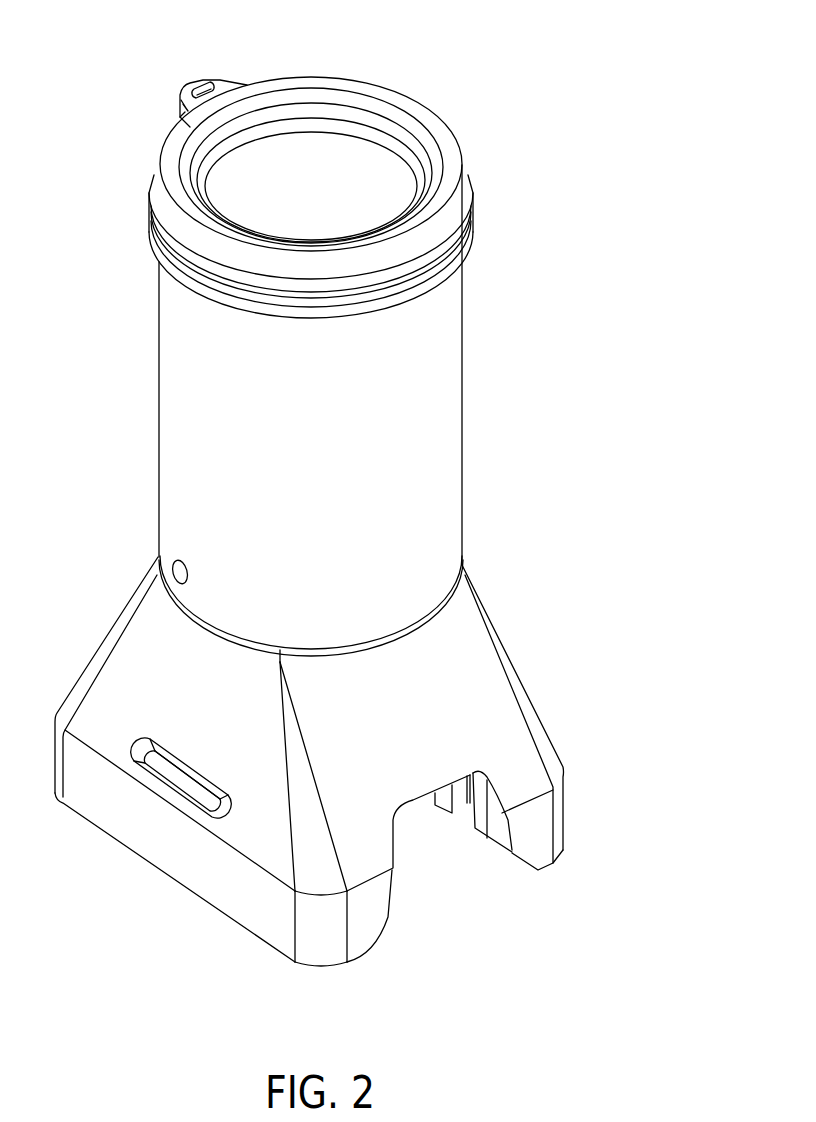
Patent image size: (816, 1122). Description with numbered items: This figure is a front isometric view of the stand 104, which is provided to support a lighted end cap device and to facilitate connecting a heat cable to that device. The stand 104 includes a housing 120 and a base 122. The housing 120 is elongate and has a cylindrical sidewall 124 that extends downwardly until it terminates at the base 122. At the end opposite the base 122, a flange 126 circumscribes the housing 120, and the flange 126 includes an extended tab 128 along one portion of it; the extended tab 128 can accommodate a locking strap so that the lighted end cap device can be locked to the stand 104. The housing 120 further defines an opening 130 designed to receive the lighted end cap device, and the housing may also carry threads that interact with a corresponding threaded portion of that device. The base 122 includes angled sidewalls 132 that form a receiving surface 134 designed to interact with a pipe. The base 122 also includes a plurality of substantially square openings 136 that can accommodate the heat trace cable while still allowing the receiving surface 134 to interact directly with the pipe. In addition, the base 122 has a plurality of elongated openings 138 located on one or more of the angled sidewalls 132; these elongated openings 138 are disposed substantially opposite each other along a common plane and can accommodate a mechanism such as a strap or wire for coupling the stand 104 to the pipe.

The stand 104 is at (539, 388).
The housing 120 is at (160, 408).
The base 122 is at (257, 826).
The cylindrical sidewall 124 is at (418, 540).
The flange 126 is at (465, 233).
The extended tab 128 is at (193, 88).
The opening 130 is at (320, 172).
The angled sidewalls 132 is at (476, 712).
The receiving surface 134 is at (322, 968).
The substantially square openings 136 is at (456, 882).
The elongated openings 138 is at (183, 780).